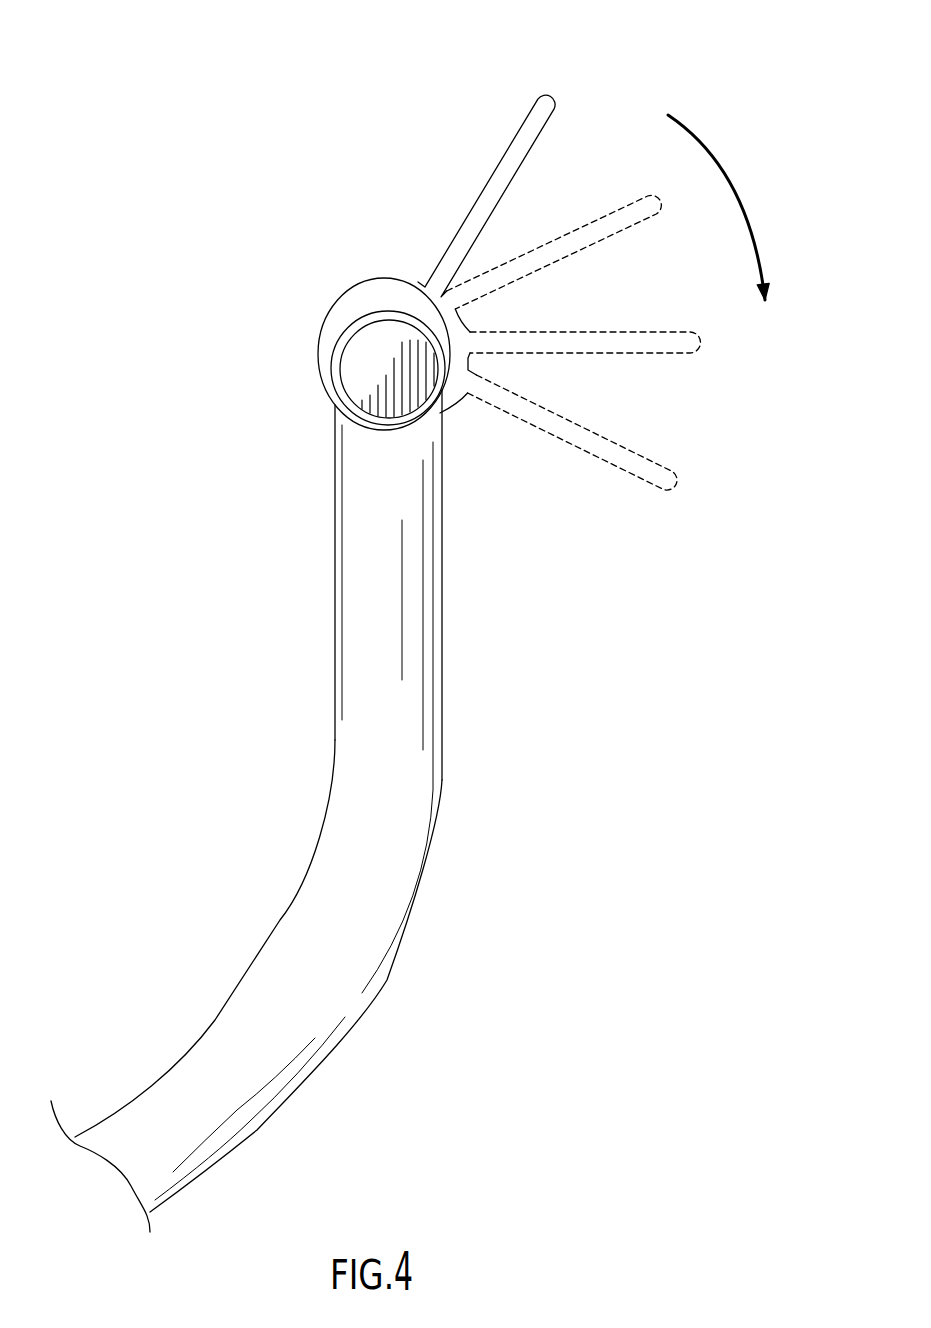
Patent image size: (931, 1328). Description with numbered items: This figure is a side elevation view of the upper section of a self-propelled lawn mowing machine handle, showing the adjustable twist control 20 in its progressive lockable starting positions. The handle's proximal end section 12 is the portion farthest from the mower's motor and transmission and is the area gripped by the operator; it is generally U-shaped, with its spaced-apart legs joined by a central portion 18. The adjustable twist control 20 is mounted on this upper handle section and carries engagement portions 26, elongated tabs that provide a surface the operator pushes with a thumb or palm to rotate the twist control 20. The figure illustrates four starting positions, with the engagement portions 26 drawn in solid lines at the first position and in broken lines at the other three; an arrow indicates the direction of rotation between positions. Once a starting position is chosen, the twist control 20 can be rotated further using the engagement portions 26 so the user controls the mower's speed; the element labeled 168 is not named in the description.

The proximal end section 12 is at (405, 1005).
The shaft 168 is at (405, 747).
The adjustable twist control 20 is at (327, 307).
The central portion 18 is at (370, 360).
The engagement portions 26 is at (543, 103).